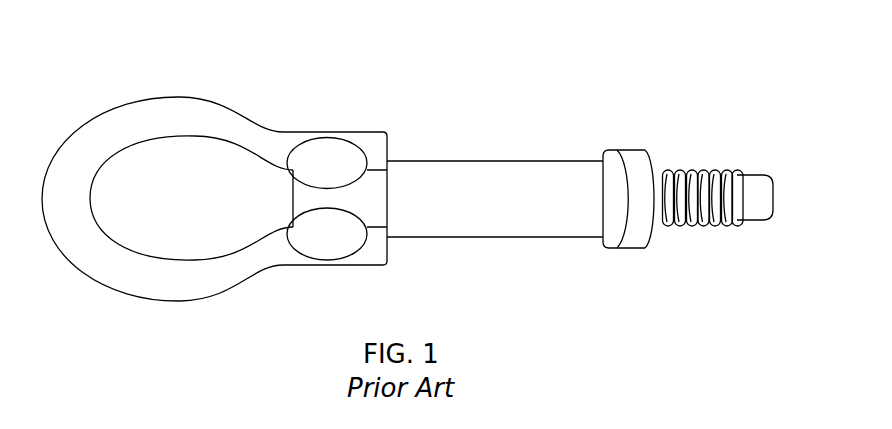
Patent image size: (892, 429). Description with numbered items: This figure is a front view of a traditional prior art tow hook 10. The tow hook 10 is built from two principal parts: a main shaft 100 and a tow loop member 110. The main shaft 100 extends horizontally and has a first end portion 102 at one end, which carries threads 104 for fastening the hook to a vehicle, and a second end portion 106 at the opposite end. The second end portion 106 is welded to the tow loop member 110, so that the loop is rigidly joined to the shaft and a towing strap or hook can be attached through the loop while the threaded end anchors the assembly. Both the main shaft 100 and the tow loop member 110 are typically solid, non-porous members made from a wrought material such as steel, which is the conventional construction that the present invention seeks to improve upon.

The tow hook 10 is at (517, 68).
The main shaft 100 is at (495, 242).
The first end portion 102 is at (683, 138).
The threads 104 is at (715, 170).
The second end portion 106 is at (397, 153).
The tow loop member 110 is at (172, 88).